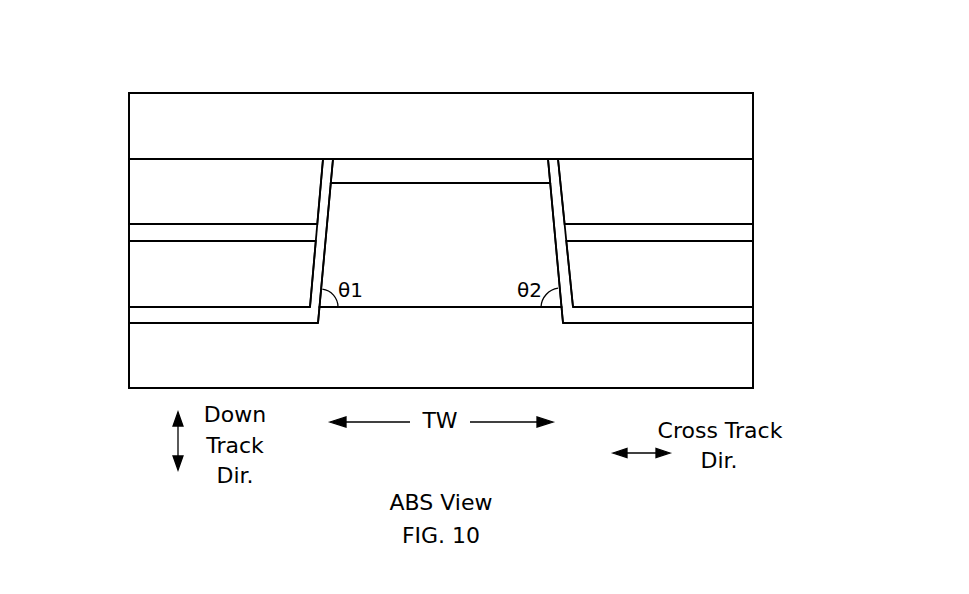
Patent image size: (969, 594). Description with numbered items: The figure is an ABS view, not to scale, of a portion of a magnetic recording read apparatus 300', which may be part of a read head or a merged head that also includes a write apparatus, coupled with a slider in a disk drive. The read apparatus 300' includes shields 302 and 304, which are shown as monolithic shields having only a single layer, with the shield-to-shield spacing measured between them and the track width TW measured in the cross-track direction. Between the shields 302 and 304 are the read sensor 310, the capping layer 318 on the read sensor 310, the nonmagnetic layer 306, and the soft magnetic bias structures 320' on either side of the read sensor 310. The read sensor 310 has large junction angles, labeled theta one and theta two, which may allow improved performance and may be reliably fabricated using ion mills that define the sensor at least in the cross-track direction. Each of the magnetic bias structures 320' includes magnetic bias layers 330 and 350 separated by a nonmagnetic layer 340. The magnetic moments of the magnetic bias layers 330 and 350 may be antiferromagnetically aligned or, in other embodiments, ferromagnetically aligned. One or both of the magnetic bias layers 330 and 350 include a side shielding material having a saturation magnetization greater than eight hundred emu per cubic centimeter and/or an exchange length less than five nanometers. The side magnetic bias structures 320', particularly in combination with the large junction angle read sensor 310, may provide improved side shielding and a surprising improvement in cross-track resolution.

The read apparatus 300' is at (441, 45).
The shield 302 is at (441, 347).
The shield 304 is at (441, 126).
The nonmagnetic layer 306 is at (128, 312).
The read sensor 310 is at (441, 245).
The capping layer 318 is at (440, 171).
The soft magnetic bias structures 320' is at (427, 274).
The magnetic bias layer 330 is at (441, 274).
The nonmagnetic layer 340 is at (128, 233).
The magnetic bias layer 350 is at (441, 192).